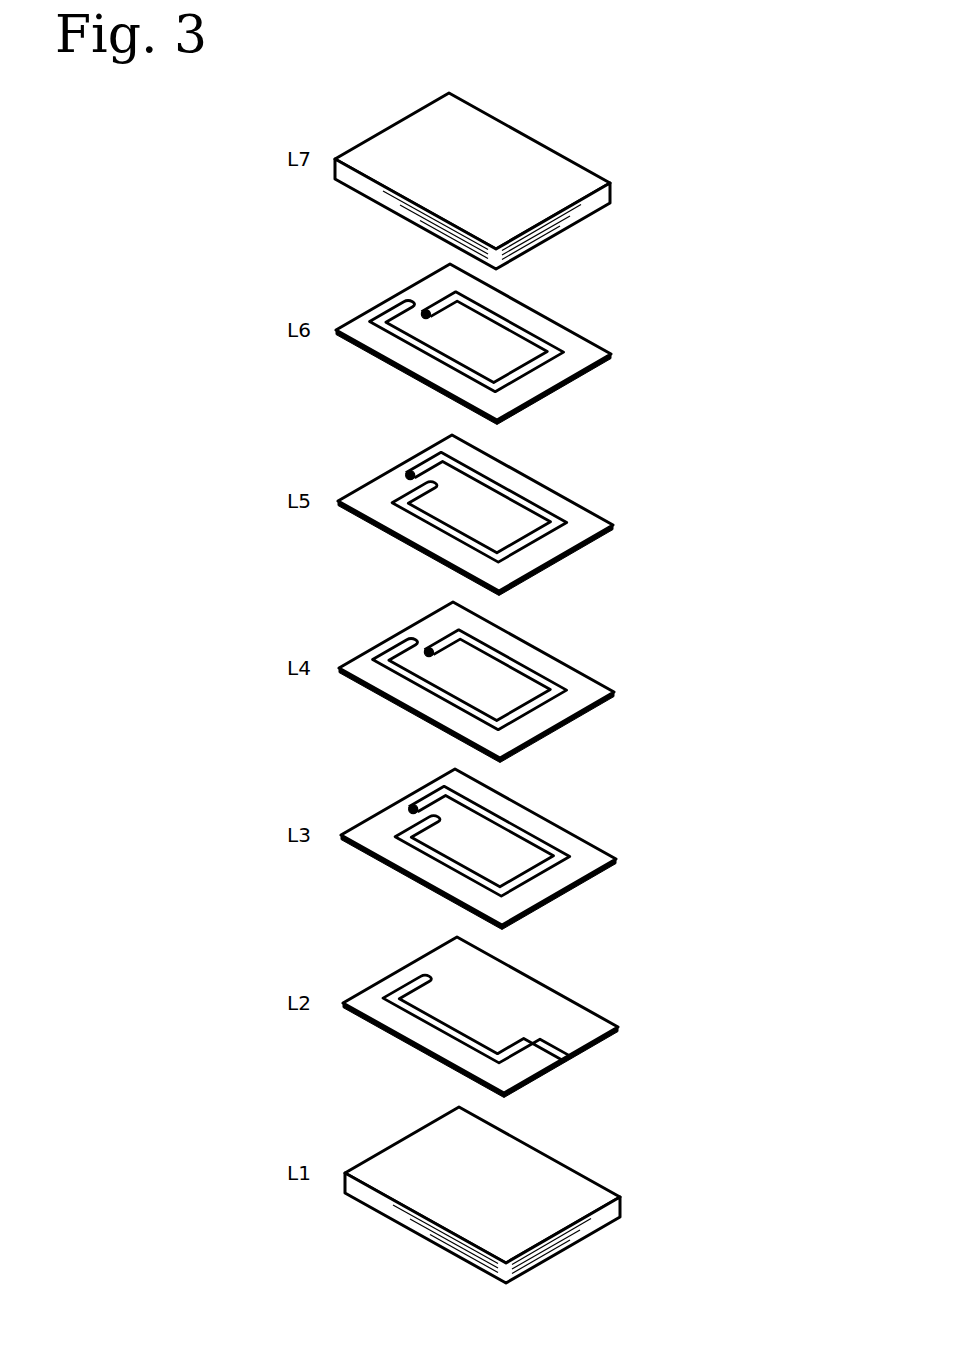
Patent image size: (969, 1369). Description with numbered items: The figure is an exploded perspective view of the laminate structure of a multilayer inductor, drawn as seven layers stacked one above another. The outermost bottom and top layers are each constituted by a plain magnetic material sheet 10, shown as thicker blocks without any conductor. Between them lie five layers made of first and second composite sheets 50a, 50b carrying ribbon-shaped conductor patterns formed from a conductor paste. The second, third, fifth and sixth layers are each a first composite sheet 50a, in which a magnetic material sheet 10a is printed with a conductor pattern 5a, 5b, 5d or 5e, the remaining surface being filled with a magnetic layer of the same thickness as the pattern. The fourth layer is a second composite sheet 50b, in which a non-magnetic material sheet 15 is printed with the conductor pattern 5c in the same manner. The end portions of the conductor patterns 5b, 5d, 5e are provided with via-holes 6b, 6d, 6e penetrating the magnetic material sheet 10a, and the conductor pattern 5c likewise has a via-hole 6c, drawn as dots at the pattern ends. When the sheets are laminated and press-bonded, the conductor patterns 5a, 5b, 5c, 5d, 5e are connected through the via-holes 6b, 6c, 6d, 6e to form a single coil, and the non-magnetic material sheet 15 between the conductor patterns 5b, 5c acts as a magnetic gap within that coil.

The magnetic material sheet 10 is at (566, 169).
The magnetic material sheet 10a is at (573, 333).
The non-magnetic material sheet 15 is at (573, 671).
The conductor pattern 5a is at (427, 1028).
The conductor pattern 5b is at (518, 825).
The conductor pattern 5c is at (516, 657).
The conductor pattern 5d is at (514, 489).
The conductor pattern 5e is at (513, 322).
The via-hole 6b is at (411, 808).
The via-hole 6c is at (426, 650).
The via-hole 6d is at (409, 474).
The via-hole 6e is at (423, 311).
The first composite sheet 50a is at (535, 672).
The second composite sheet 50b is at (535, 674).